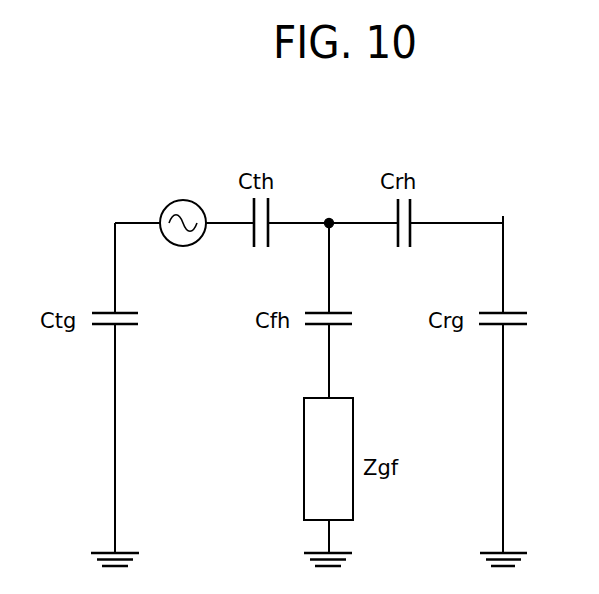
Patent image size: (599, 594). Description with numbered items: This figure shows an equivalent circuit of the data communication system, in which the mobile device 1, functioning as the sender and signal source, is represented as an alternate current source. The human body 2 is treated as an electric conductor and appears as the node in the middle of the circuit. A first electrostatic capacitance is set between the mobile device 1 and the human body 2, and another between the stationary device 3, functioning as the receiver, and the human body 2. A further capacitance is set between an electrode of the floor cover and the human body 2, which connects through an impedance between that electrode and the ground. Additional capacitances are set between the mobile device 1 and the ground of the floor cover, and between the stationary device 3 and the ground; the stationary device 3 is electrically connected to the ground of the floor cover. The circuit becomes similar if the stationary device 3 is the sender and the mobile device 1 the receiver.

The mobile device 1 is at (165, 182).
The human body 2 is at (323, 208).
The stationary device 3 is at (495, 208).